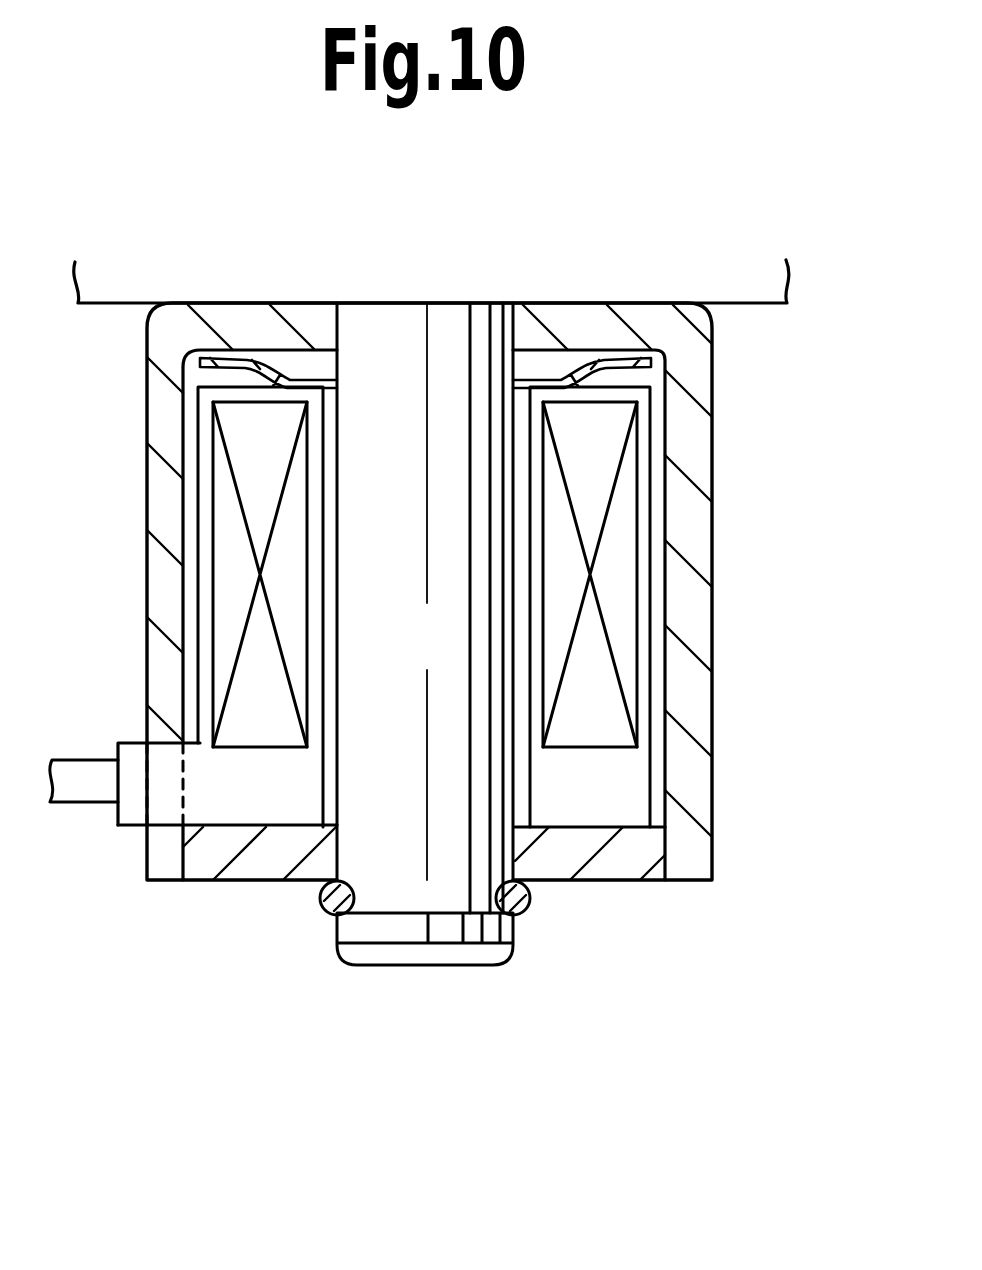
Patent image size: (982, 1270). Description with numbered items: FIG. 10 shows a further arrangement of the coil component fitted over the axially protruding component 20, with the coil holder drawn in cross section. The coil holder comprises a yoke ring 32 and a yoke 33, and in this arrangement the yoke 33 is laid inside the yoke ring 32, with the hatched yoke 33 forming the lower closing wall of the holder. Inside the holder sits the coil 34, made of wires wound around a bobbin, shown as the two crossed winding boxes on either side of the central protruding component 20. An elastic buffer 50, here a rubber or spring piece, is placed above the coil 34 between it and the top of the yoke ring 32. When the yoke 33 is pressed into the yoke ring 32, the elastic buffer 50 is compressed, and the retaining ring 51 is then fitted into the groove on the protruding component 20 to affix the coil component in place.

The solenoid actuator 20 is at (473, 679).
The yoke ring 32 is at (697, 580).
The yoke 33 is at (648, 872).
The coil 34 is at (630, 782).
The elastic buffer 50 is at (660, 358).
The retaining ring 51 is at (533, 907).